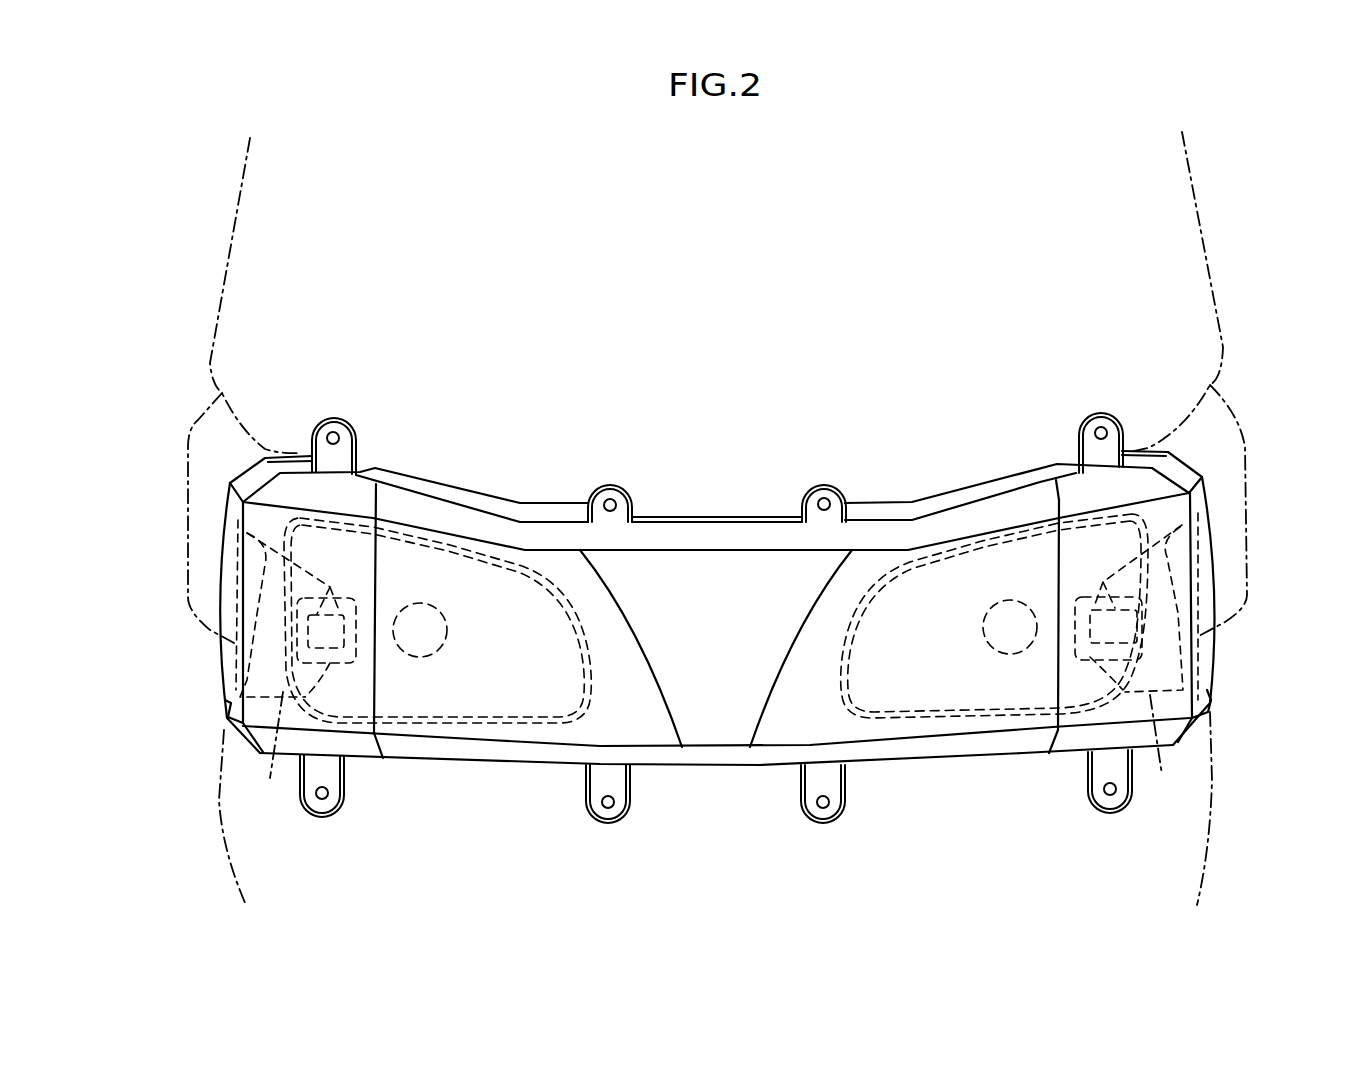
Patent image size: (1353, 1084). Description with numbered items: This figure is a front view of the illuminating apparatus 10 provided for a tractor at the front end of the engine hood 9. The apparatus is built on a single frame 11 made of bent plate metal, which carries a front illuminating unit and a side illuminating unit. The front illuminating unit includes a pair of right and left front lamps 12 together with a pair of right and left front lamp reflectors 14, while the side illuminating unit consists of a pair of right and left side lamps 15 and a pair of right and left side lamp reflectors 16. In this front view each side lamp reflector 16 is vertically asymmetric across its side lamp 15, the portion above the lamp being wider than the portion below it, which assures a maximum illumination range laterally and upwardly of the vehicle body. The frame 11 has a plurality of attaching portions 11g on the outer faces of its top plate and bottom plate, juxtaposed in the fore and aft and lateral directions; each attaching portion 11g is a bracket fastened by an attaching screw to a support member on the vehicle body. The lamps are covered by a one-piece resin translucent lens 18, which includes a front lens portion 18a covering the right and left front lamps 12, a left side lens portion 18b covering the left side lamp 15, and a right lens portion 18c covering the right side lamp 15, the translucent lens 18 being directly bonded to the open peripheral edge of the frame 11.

The engine hood 9 is at (230, 235).
The illuminating apparatus 10 is at (1013, 422).
The frame 11 is at (473, 487).
The attaching portion 11g is at (333, 416).
The front lamp 12 is at (445, 640).
The front lamp reflector 14 is at (572, 616).
The side lamp 15 is at (333, 584).
The side lamp reflector 16 is at (718, 749).
The translucent lens 18 is at (715, 629).
The front lens portion 18a is at (638, 730).
The left side lens portion 18b is at (220, 657).
The right lens portion 18c is at (1215, 653).